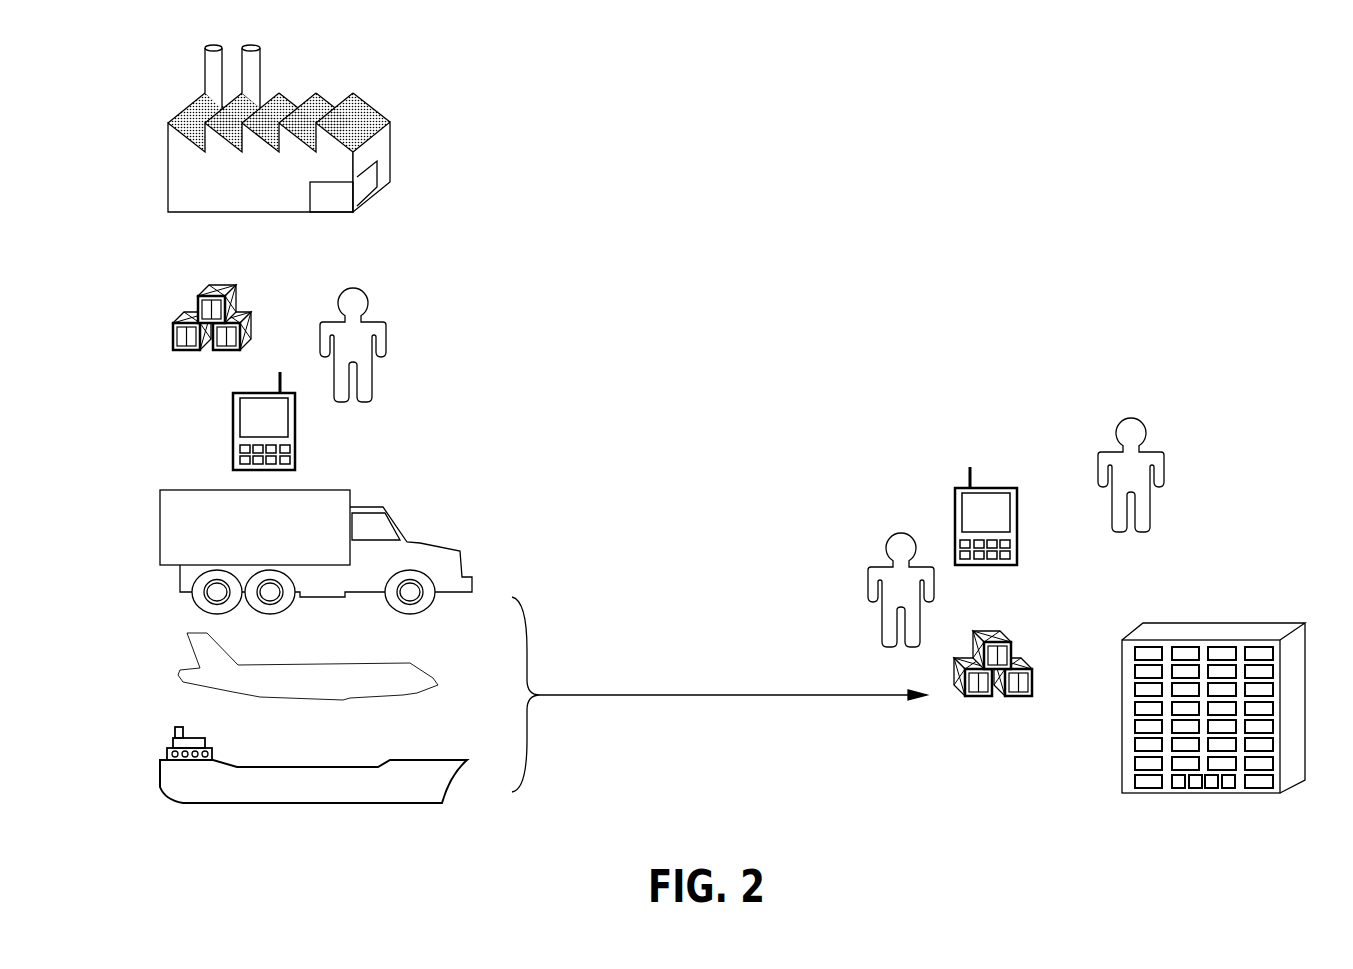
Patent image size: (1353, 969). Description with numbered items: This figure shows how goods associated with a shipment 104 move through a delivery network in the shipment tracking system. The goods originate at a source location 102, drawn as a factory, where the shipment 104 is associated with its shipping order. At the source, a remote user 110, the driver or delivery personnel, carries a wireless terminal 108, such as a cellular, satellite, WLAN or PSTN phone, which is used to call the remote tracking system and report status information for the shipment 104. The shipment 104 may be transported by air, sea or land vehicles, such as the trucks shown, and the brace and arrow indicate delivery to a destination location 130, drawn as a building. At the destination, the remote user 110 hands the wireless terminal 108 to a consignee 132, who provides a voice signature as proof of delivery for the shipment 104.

The source location 102 is at (353, 93).
The shipment 104 is at (173, 348).
The wireless terminal 108 is at (235, 457).
The remote user 110 is at (390, 330).
The destination location 130 is at (1160, 630).
The consignee 132 is at (1167, 460).